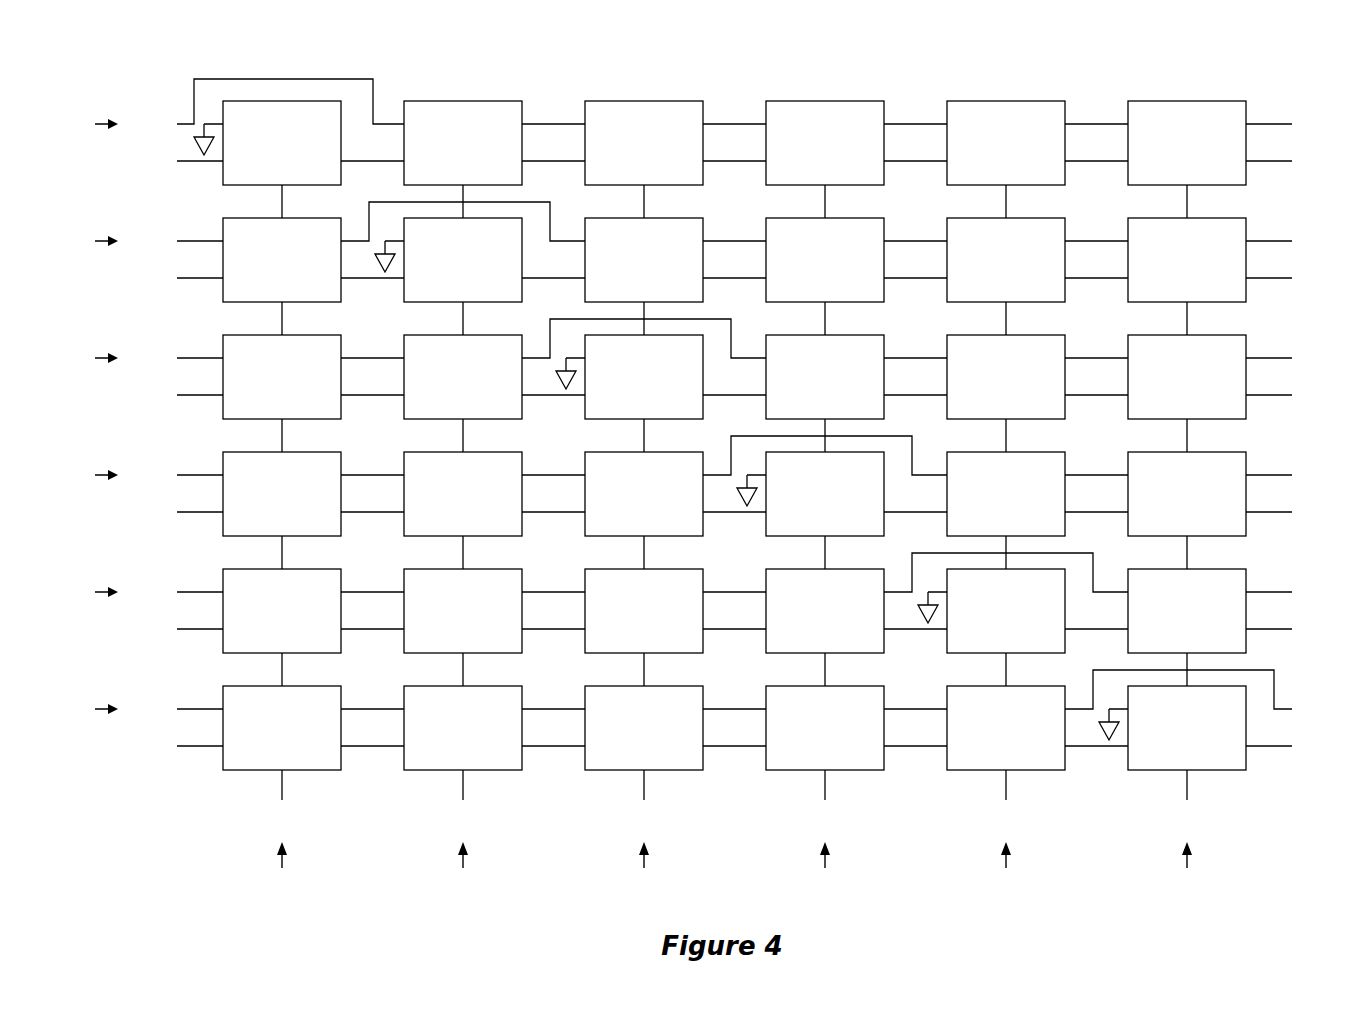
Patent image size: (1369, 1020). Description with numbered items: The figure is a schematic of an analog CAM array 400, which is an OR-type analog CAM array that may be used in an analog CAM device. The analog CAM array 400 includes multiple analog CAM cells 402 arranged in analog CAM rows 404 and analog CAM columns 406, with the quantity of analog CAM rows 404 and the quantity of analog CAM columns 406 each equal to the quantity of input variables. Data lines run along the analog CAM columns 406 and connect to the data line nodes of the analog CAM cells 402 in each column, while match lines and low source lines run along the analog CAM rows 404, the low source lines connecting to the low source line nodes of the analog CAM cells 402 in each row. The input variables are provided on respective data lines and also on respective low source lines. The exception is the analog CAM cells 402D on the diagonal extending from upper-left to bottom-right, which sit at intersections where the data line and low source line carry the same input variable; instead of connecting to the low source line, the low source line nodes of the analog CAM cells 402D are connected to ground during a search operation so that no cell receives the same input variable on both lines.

The analog CAM array 400 is at (87, 61).
The analog CAM cell 402 is at (734, 435).
The analog CAM cell on the diagonal 402D is at (720, 435).
The analog CAM row 404 is at (1290, 218).
The analog CAM column 406 is at (947, 90).